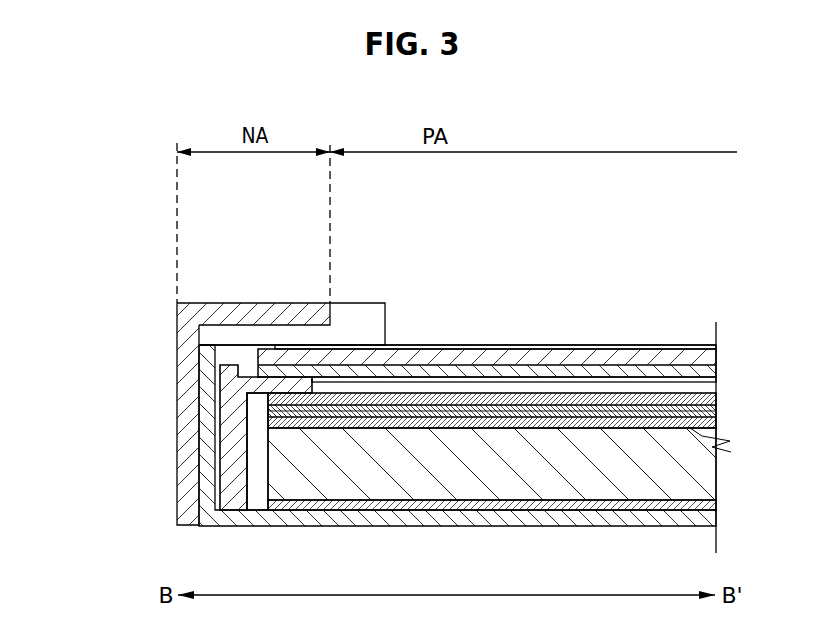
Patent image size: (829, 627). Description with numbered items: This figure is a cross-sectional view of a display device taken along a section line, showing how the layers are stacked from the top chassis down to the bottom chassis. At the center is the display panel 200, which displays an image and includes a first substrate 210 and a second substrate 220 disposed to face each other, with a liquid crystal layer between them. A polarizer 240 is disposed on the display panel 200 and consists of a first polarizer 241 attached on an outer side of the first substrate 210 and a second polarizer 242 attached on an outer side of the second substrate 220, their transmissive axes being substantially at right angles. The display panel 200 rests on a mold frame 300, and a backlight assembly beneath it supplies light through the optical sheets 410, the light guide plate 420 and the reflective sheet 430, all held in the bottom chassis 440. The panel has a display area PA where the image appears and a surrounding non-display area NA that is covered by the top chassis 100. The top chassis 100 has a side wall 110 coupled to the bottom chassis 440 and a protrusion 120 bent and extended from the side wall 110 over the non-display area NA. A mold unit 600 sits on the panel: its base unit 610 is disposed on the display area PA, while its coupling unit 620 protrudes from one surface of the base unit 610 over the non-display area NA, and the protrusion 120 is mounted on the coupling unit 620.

The top chassis 100 is at (92, 280).
The side wall 110 is at (177, 336).
The protrusion 120 is at (233, 312).
The display panel 200 is at (487, 309).
The first substrate 210 is at (434, 362).
The second substrate 220 is at (438, 288).
The polarizer 240 is at (514, 312).
The first polarizer 241 is at (673, 288).
The second polarizer 242 is at (673, 347).
The mold frame 300 is at (235, 483).
The optical sheets 410 is at (723, 393).
The light guide plate 420 is at (698, 460).
The reflective sheet 430 is at (710, 502).
The bottom chassis 440 is at (705, 518).
The mold unit 600 is at (243, 227).
The base unit 610 is at (353, 315).
The coupling unit 620 is at (270, 335).